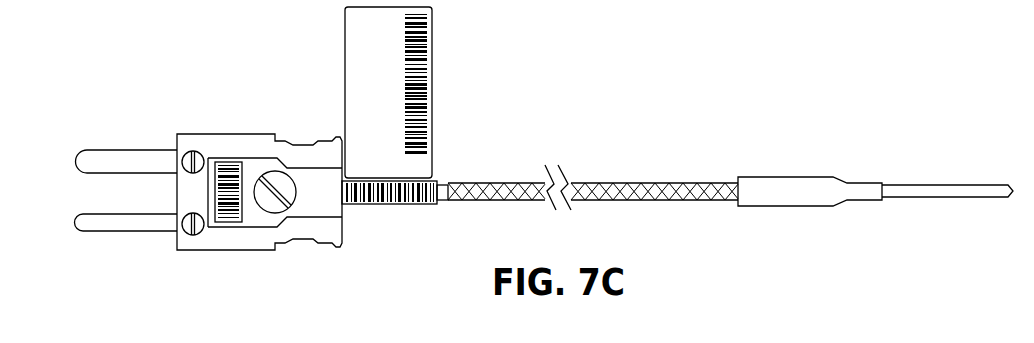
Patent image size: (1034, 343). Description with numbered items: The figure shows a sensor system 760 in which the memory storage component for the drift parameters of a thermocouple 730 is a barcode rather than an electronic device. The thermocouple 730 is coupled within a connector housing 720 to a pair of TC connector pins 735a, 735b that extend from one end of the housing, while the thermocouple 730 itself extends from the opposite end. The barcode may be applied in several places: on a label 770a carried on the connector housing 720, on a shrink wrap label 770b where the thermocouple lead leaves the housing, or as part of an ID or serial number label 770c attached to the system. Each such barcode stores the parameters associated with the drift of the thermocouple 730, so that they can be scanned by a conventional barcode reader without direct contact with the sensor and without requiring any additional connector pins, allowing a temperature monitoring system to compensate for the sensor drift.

The sensor system 760 is at (920, 82).
The connector housing 720 is at (208, 135).
The TC connector pin 735a is at (107, 150).
The TC connector pin 735b is at (107, 233).
The label 770a is at (245, 168).
The shrink wrap label 770b is at (408, 207).
The ID or Serial number label 770c is at (434, 90).
The thermocouple 730 is at (950, 185).